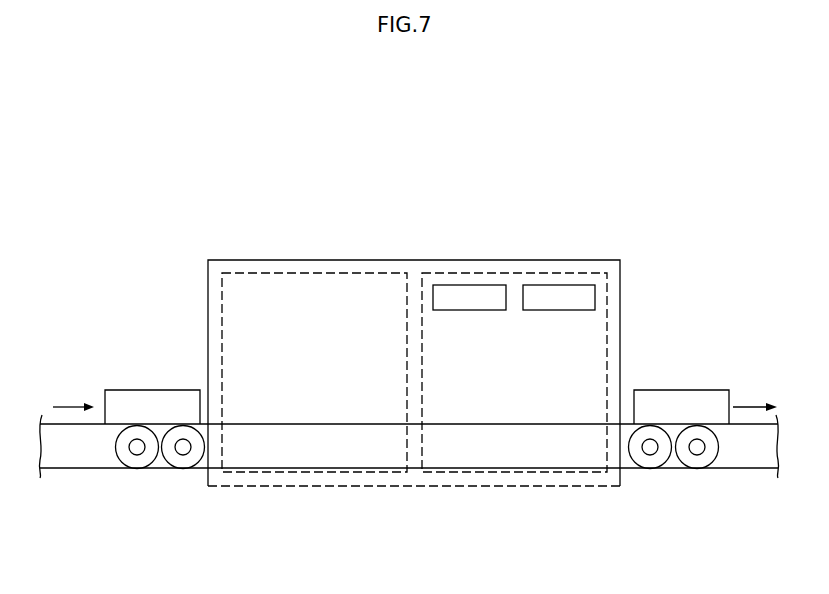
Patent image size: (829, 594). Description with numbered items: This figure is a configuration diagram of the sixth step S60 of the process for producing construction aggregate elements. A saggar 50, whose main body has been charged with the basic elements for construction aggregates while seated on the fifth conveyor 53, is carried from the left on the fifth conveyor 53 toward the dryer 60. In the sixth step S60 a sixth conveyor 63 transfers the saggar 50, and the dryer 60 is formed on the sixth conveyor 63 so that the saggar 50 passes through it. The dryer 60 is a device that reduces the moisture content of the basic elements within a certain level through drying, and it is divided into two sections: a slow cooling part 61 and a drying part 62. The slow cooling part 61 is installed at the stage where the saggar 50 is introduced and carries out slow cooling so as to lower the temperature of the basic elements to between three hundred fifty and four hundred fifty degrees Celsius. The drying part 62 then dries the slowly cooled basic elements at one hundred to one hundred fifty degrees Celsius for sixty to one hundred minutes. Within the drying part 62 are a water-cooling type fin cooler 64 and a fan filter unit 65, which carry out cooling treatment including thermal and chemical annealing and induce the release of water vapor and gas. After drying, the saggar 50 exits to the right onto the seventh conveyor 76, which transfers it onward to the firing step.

The saggar 50 is at (152, 398).
The fifth conveyor 53 is at (70, 470).
The dryer 60 is at (242, 247).
The sixth step S60 is at (392, 188).
The slow cooling part 61 is at (320, 276).
The drying part 62 is at (608, 289).
The sixth conveyor 63 is at (183, 470).
The water-cooling type fin cooler 64 is at (470, 287).
The fan filter unit 65 is at (558, 287).
The seventh conveyor 76 is at (733, 470).